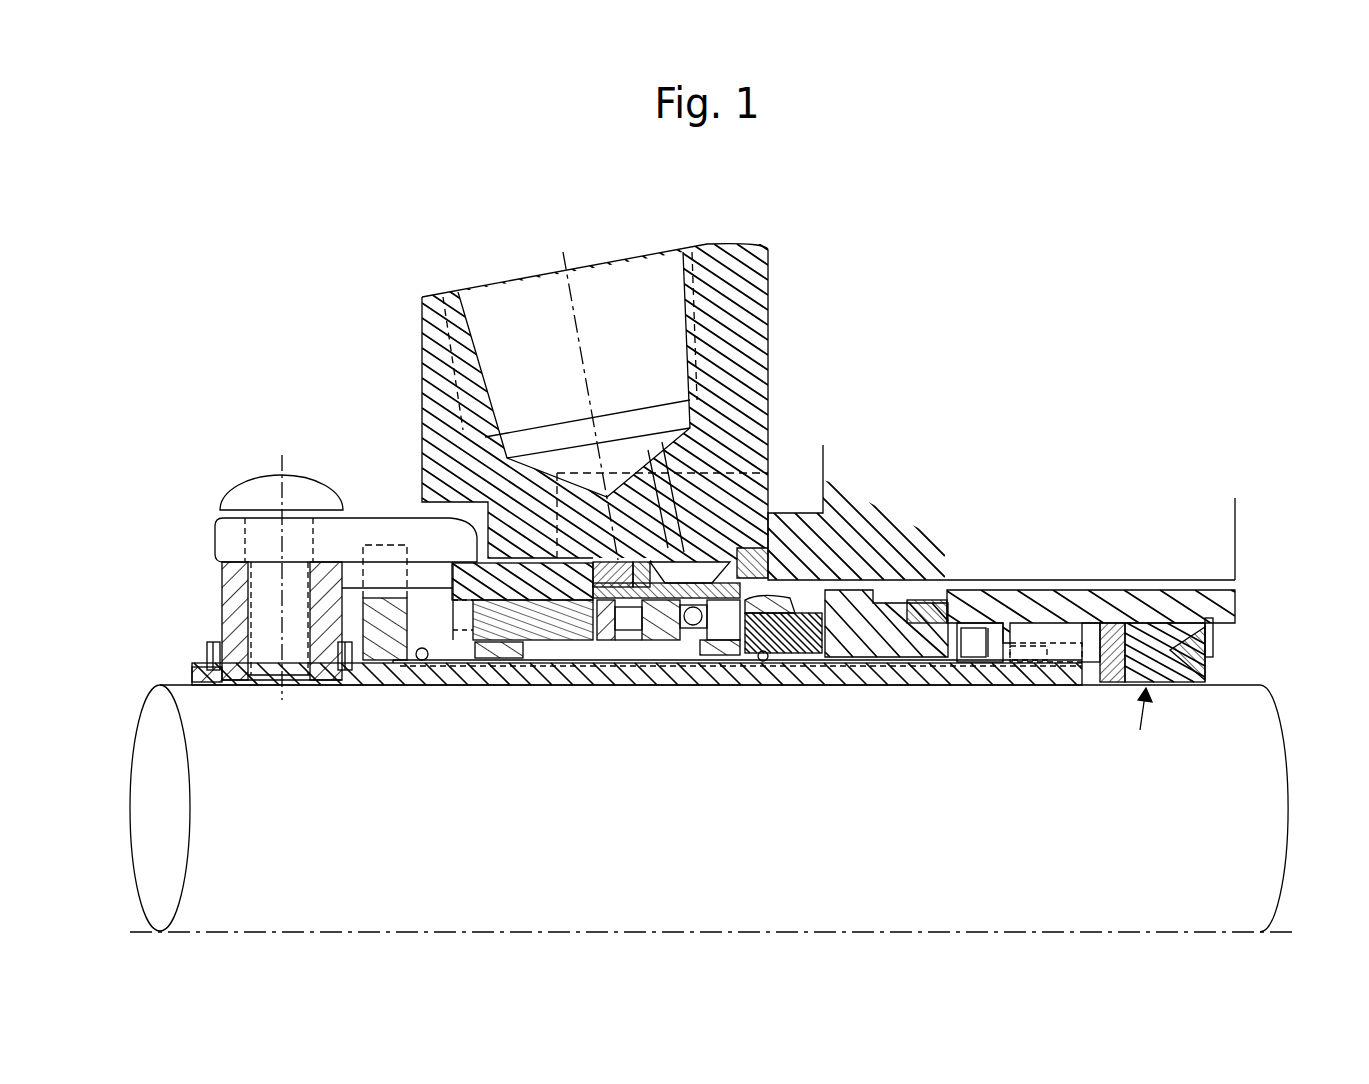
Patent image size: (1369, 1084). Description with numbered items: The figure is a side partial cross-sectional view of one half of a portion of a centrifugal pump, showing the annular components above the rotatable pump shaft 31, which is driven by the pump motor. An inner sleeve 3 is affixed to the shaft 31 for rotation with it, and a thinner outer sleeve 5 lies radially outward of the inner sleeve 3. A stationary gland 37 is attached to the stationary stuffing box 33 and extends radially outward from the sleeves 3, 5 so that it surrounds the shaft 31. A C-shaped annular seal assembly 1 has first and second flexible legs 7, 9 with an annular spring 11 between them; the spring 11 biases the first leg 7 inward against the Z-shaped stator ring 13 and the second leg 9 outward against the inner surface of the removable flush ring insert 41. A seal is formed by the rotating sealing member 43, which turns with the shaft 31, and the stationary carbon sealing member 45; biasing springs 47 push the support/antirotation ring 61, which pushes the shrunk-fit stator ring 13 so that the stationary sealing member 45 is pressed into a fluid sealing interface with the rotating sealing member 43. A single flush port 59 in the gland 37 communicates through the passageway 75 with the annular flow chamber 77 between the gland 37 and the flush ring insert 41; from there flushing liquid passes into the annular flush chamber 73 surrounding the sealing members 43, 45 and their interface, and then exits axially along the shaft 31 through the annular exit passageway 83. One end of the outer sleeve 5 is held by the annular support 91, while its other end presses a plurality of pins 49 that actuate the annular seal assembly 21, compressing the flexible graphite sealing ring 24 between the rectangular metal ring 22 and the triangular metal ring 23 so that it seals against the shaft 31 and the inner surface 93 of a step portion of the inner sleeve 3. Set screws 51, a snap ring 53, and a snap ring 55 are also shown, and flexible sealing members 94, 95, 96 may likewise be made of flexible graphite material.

The C-shaped annular seal assembly 1 is at (672, 642).
The inner sleeve 3 is at (362, 681).
The outer sleeve 5 is at (420, 650).
The first leg 7 is at (684, 645).
The second leg 9 is at (733, 654).
The annular spring 11 is at (698, 648).
The Z-shaped annular stator ring 13 is at (612, 644).
The annular seal assembly 21 is at (1137, 725).
The annular metal ring 22 is at (1100, 590).
The annular metal ring 23 is at (1213, 668).
The flexible graphite annular sealing ring 24 is at (1168, 665).
The pump shaft 31 is at (1263, 750).
The stuffing box 33 is at (813, 590).
The gland 37 is at (737, 262).
The flush ring insert 41 is at (542, 652).
The rotating sealing member 43 is at (940, 598).
The stationary sealing member 45 is at (798, 660).
The biasing springs 47 is at (495, 657).
The pins 49 is at (1085, 665).
The set screws 51 is at (232, 502).
The snap ring 53 is at (207, 658).
The snap ring 55 is at (340, 682).
The flush port 59 is at (538, 296).
The support/antirotation ring 61 is at (562, 648).
The annular flush chamber 73 is at (860, 597).
The passageway 75 is at (650, 452).
The annular flow chamber 77 is at (640, 644).
The annular exit passageway 83 is at (1048, 588).
The annular support 91 is at (383, 652).
The inner surface of step portion 93 is at (1157, 590).
The flexible sealing member 94 is at (935, 603).
The flexible sealing member 95 is at (475, 684).
The flexible sealing member 96 is at (467, 507).